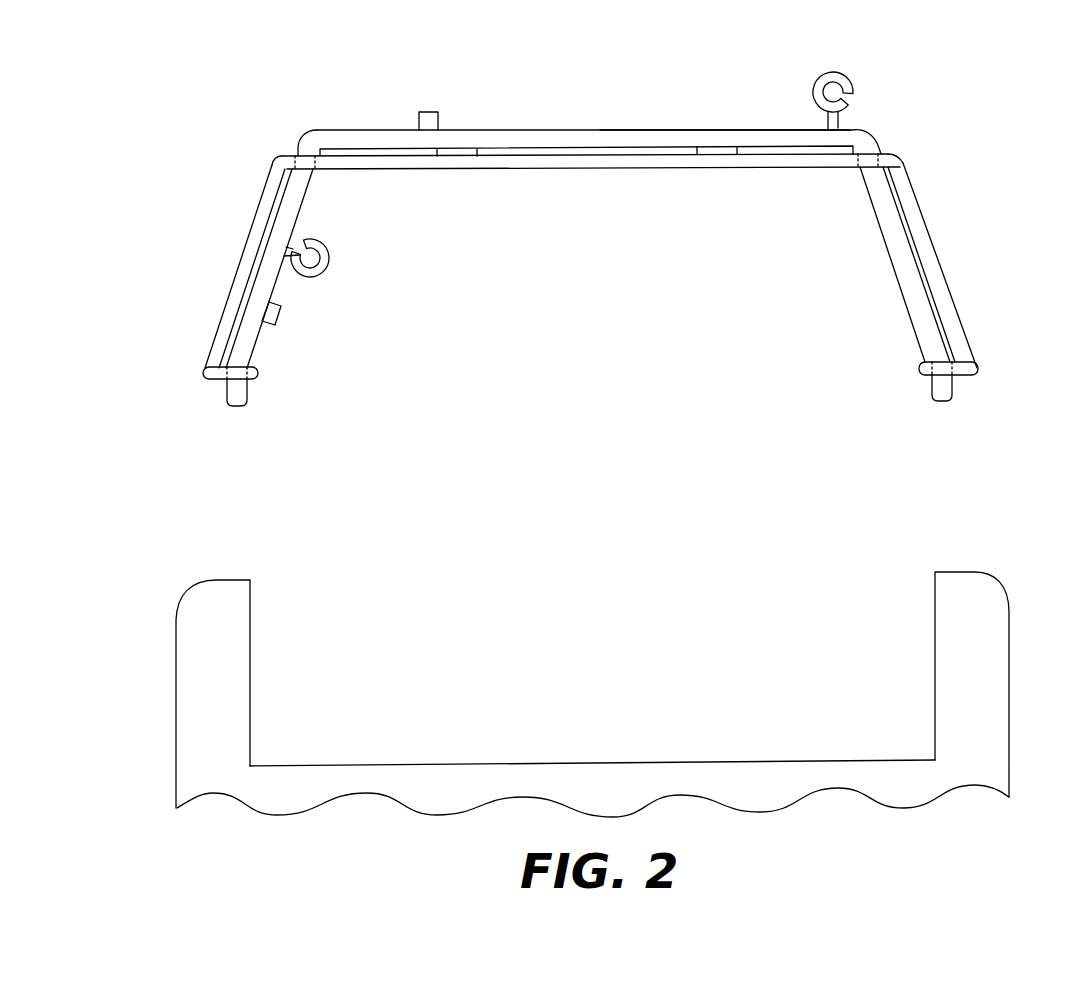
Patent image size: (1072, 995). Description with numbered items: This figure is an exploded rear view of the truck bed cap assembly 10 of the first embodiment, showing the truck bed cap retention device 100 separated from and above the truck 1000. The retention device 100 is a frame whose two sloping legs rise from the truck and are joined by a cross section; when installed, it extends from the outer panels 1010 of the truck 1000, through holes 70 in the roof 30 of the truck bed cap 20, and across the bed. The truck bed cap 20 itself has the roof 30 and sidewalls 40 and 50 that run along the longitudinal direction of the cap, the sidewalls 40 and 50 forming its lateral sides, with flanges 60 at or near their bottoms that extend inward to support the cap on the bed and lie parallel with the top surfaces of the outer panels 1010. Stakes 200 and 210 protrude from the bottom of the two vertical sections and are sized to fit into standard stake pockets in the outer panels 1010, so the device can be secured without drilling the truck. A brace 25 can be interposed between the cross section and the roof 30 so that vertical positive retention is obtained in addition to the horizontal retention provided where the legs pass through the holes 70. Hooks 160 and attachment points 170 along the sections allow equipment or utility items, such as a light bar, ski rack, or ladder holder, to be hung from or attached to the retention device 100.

The truck bed cap assembly 10 is at (505, 98).
The truck bed cap 20 is at (583, 142).
The brace 25 is at (458, 157).
The roof 30 is at (357, 156).
The sidewall 40 is at (247, 248).
The sidewall 50 is at (922, 213).
The flange 60 is at (258, 372).
The hole 70 is at (306, 170).
The truck bed cap retention device 100 is at (704, 118).
The hook 160 is at (852, 90).
The attachment point 170 is at (428, 112).
The stake 200 is at (227, 396).
The stake 210 is at (953, 388).
The truck 1000 is at (501, 749).
The outer panel 1010 is at (228, 580).